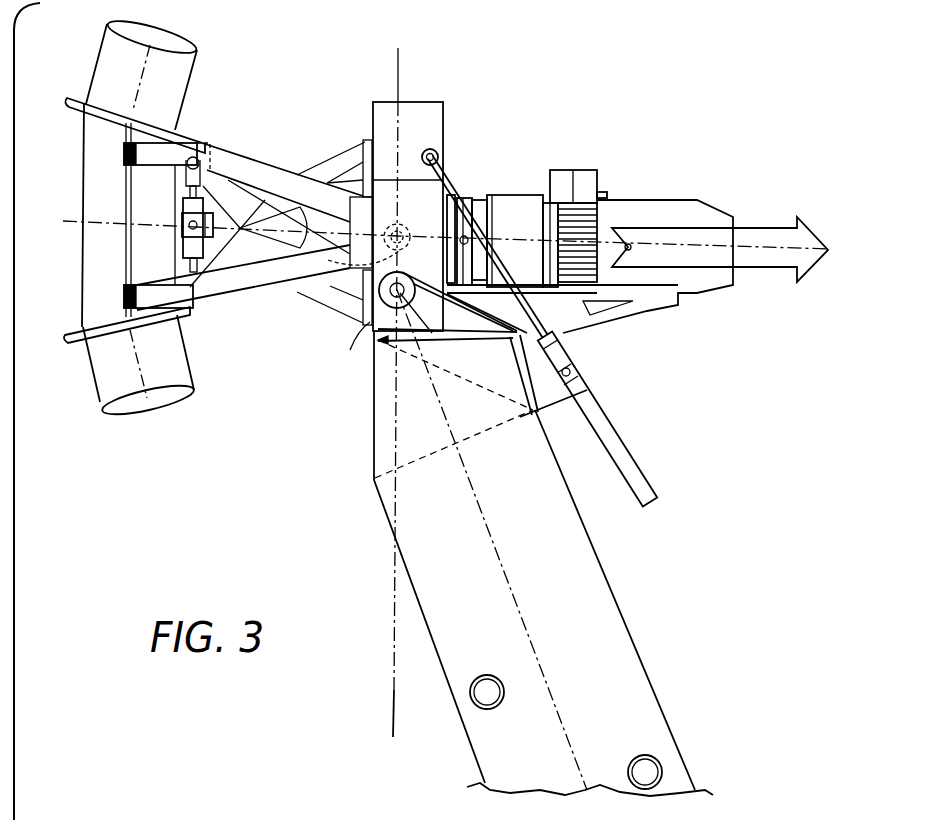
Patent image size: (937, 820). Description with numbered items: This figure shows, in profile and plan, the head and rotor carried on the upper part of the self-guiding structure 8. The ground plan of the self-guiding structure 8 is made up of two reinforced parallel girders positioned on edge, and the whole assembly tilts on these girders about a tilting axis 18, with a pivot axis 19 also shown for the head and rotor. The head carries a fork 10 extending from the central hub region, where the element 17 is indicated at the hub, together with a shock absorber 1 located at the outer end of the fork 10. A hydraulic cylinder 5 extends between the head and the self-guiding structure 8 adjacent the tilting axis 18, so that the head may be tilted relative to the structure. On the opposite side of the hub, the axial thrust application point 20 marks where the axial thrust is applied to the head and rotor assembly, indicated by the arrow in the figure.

The shock absorber 1 is at (187, 207).
The hydraulic cylinder 5 is at (617, 450).
The self-guiding structure 8 is at (582, 605).
The fork 10 is at (270, 180).
The hub axis 17 is at (362, 258).
The tilting axis 18 is at (388, 303).
The pivot axis 19 is at (391, 692).
The axial thrust application point 20 is at (628, 246).